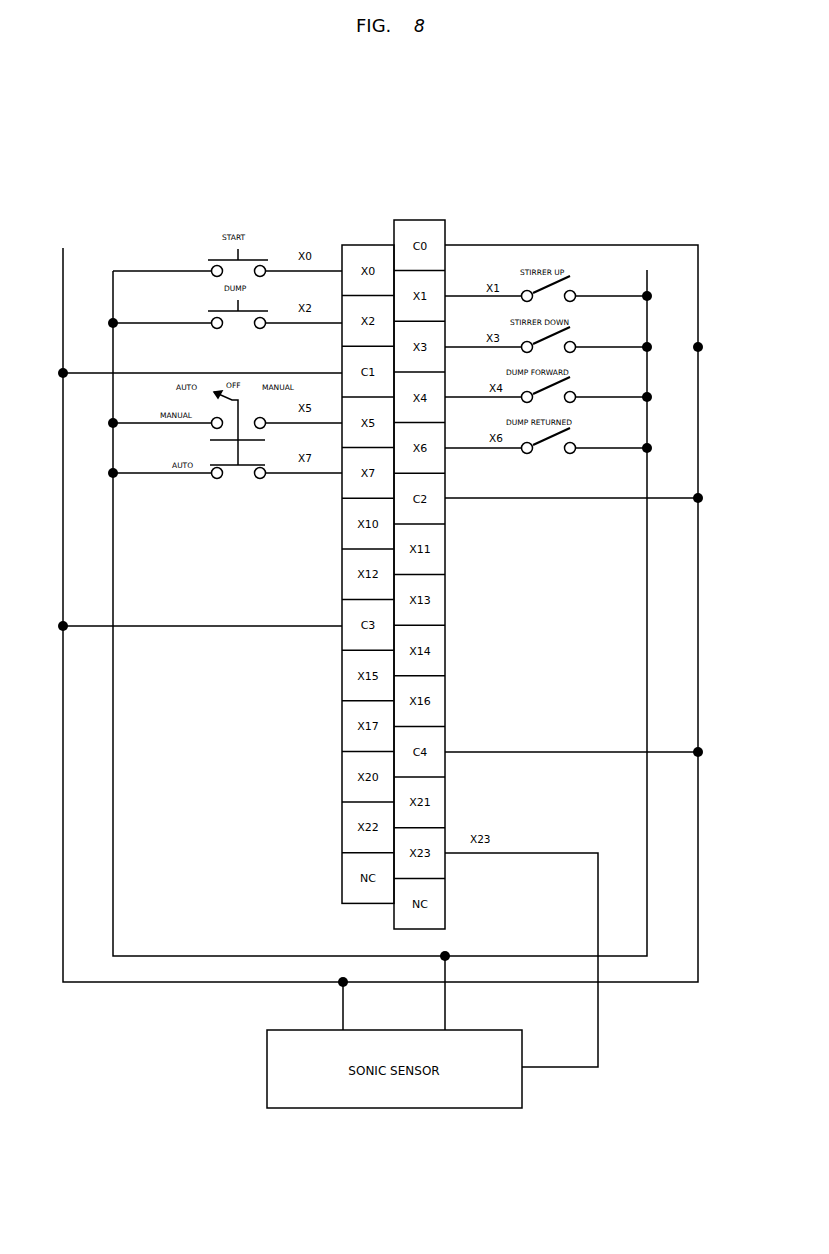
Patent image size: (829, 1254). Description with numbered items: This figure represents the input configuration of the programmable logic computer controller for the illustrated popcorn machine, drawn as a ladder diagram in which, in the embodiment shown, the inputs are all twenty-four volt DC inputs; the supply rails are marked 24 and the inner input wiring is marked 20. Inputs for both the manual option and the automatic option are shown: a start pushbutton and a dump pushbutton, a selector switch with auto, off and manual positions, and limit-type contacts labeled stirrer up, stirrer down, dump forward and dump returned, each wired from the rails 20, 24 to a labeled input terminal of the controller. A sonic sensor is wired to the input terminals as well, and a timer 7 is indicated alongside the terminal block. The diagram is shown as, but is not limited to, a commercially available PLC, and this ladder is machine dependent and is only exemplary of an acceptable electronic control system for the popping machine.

The power supply lines 24 is at (377, 599).
The controller wiring 20 is at (387, 589).
The timer 7 is at (571, 625).